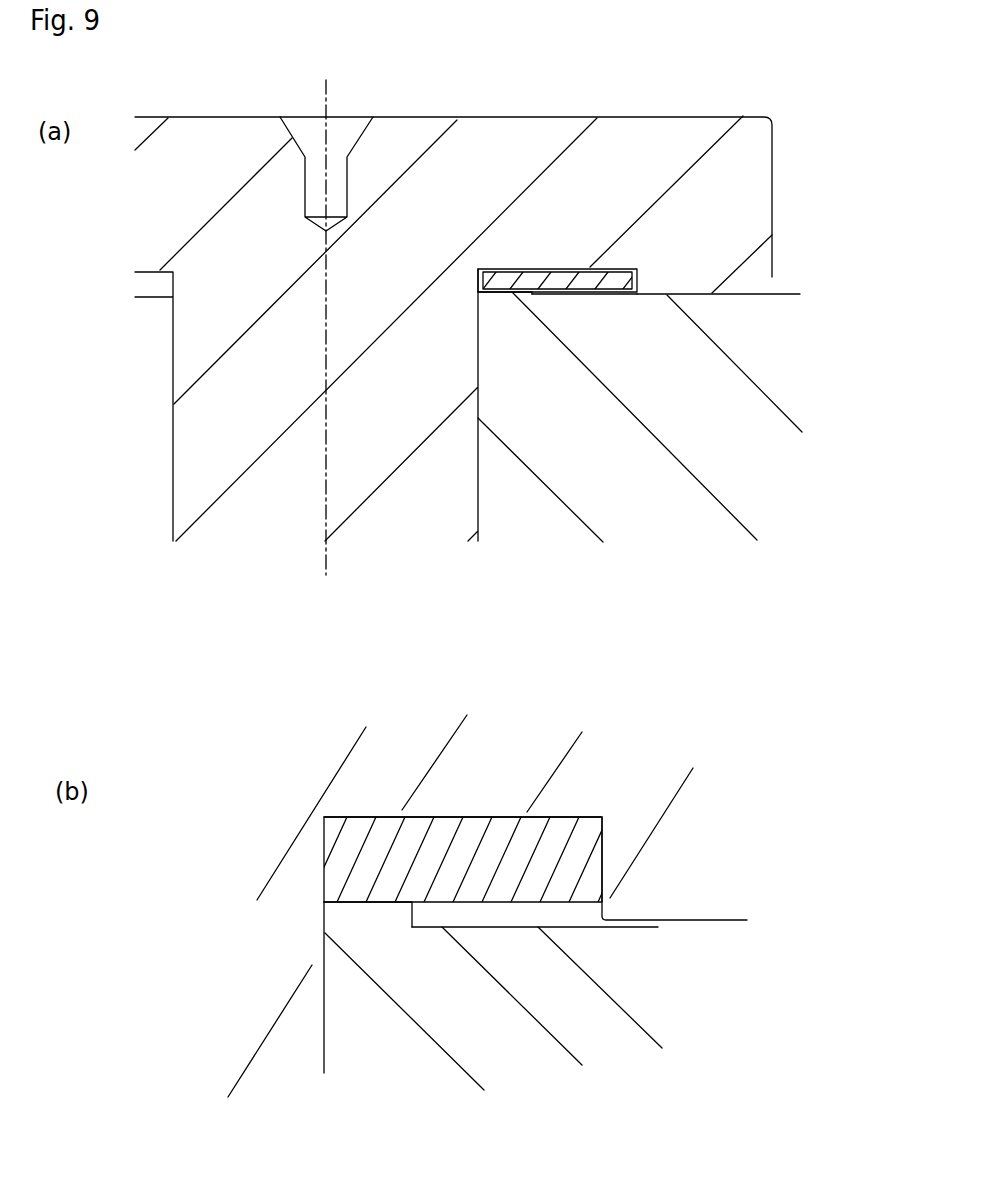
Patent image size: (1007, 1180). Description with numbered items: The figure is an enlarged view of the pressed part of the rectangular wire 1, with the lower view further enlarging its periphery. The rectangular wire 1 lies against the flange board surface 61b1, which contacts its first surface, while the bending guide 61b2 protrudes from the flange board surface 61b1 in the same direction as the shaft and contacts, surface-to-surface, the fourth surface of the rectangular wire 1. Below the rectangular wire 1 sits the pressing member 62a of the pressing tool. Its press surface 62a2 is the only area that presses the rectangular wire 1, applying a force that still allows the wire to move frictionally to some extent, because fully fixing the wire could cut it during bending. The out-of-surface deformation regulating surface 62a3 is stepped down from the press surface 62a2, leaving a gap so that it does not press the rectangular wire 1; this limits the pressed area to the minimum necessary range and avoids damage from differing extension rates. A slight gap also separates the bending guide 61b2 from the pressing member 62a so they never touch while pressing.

The rectangular wire 1 is at (507, 282).
The flange board surface 61b1 is at (567, 270).
The bending guide 61b2 is at (686, 283).
The pressing member 62a is at (608, 440).
The press surface 62a2 is at (507, 295).
The out-of-surface deformation regulating surface 62a3 is at (597, 295).